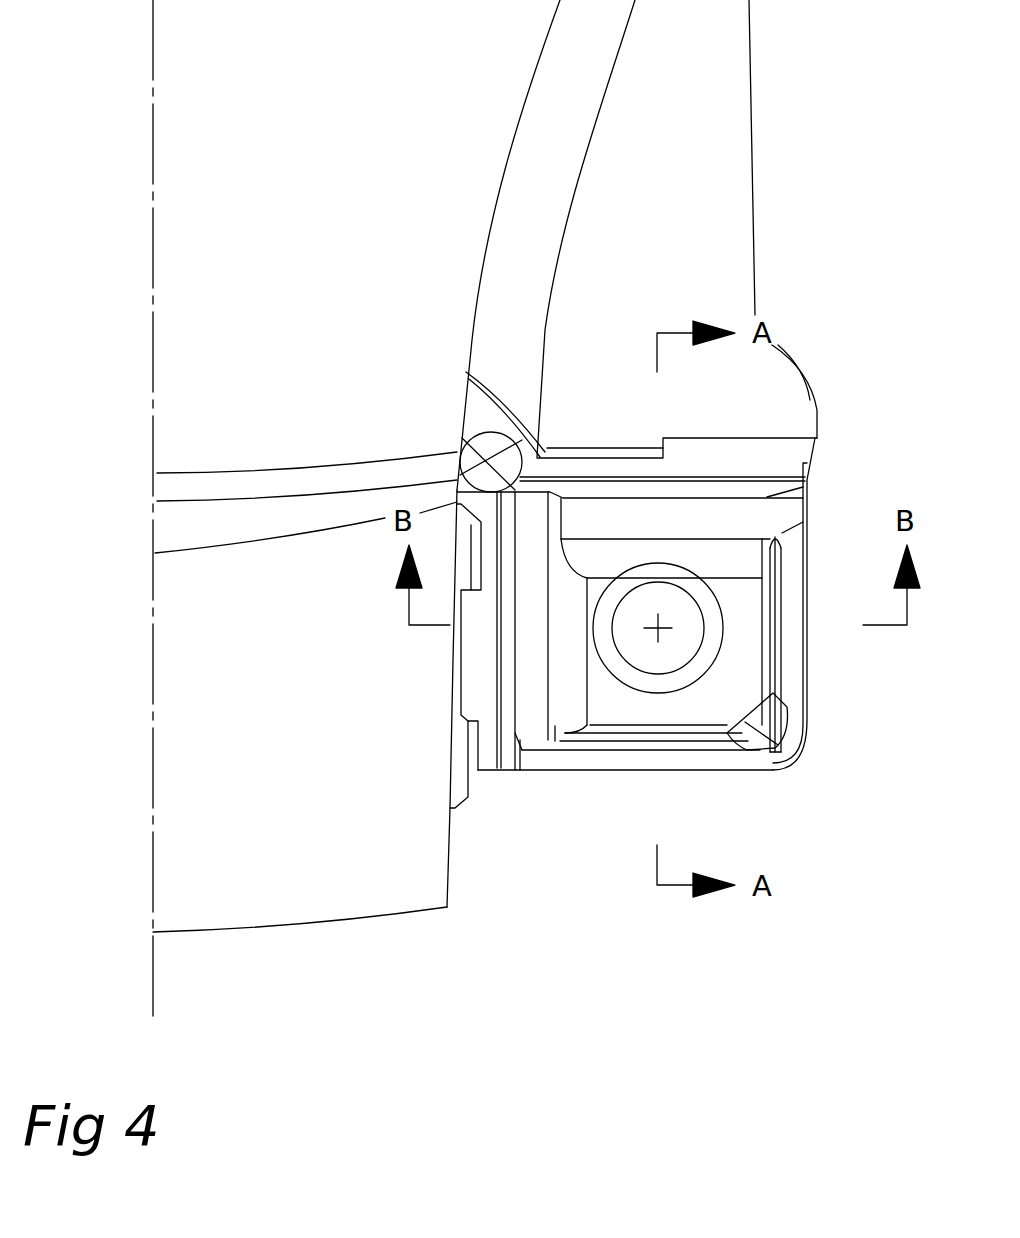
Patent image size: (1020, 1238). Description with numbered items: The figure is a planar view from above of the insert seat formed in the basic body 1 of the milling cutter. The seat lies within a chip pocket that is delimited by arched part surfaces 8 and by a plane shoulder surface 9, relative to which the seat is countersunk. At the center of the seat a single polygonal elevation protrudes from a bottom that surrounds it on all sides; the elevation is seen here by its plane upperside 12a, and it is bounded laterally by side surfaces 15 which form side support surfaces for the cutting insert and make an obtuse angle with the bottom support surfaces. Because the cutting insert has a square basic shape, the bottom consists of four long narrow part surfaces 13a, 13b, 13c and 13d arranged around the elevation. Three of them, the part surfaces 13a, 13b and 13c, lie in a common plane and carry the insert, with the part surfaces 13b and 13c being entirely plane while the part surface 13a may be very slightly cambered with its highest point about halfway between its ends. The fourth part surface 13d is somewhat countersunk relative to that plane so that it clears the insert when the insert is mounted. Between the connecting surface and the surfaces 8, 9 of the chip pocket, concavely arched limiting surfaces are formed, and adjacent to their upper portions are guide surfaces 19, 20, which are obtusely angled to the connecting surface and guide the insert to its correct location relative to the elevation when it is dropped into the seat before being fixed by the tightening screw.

The basic body 1 is at (765, 185).
The arched part surfaces 8 is at (507, 287).
The plane shoulder surface 9 is at (637, 268).
The guide surface 20 is at (600, 451).
The part surface of bottom 13c is at (693, 515).
The part surface of bottom 13d is at (531, 655).
The part surface of bottom 13b is at (795, 665).
The part surface of bottom 13a is at (612, 760).
The plane upperside 12a is at (728, 718).
The side surface 15 is at (770, 614).
The guide surface 19 is at (475, 753).